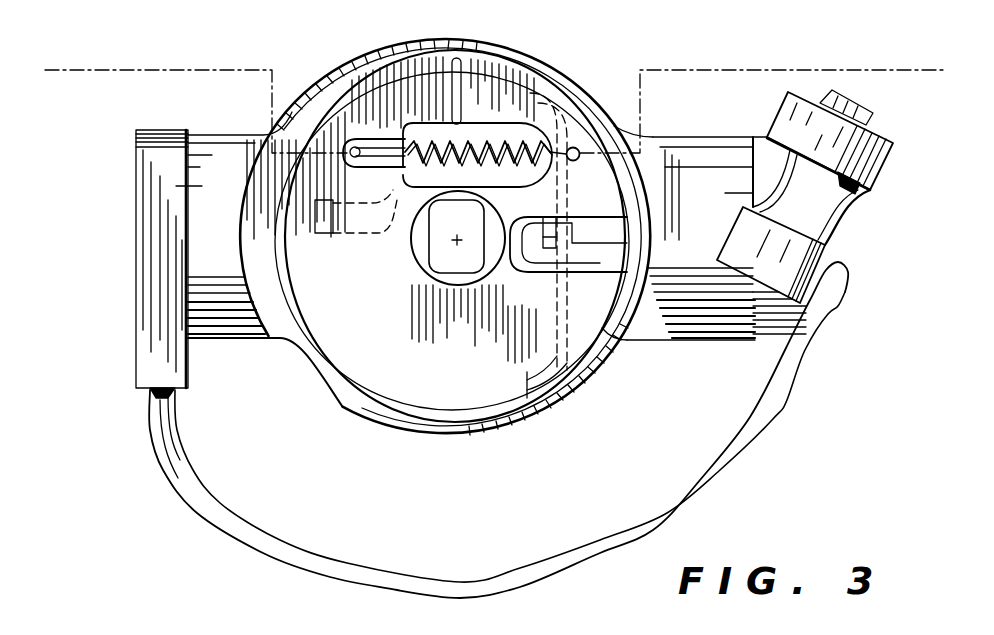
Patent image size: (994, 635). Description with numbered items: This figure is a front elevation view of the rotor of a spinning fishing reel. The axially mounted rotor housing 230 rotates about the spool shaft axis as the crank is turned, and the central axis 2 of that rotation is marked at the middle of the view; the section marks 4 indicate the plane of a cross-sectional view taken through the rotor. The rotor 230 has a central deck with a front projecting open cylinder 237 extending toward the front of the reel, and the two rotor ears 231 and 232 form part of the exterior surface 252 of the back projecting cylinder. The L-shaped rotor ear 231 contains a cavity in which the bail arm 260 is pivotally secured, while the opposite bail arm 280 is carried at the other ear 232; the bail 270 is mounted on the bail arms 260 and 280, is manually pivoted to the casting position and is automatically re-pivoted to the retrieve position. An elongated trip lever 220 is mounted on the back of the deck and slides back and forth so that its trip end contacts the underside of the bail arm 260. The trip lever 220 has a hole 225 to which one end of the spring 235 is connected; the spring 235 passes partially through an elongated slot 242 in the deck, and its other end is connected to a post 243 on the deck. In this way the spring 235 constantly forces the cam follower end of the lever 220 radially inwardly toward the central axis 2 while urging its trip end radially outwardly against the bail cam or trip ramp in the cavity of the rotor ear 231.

The central axis 2 is at (465, 234).
The section line 4- 4 is at (915, 110).
The trip lever 220 is at (391, 210).
The hole 225 is at (358, 148).
The rotor housing 230 is at (534, 413).
The rotor ear 231 is at (705, 318).
The rotor ear 232 is at (229, 317).
The spring 235 is at (432, 140).
The front projecting open cylinder 237 is at (377, 395).
The elongated slot 242 is at (497, 135).
The post 243 is at (576, 150).
The exterior surface 252 is at (583, 377).
The bail arm 260 is at (776, 338).
The bail 270 is at (597, 560).
The bail arm 280 is at (143, 289).